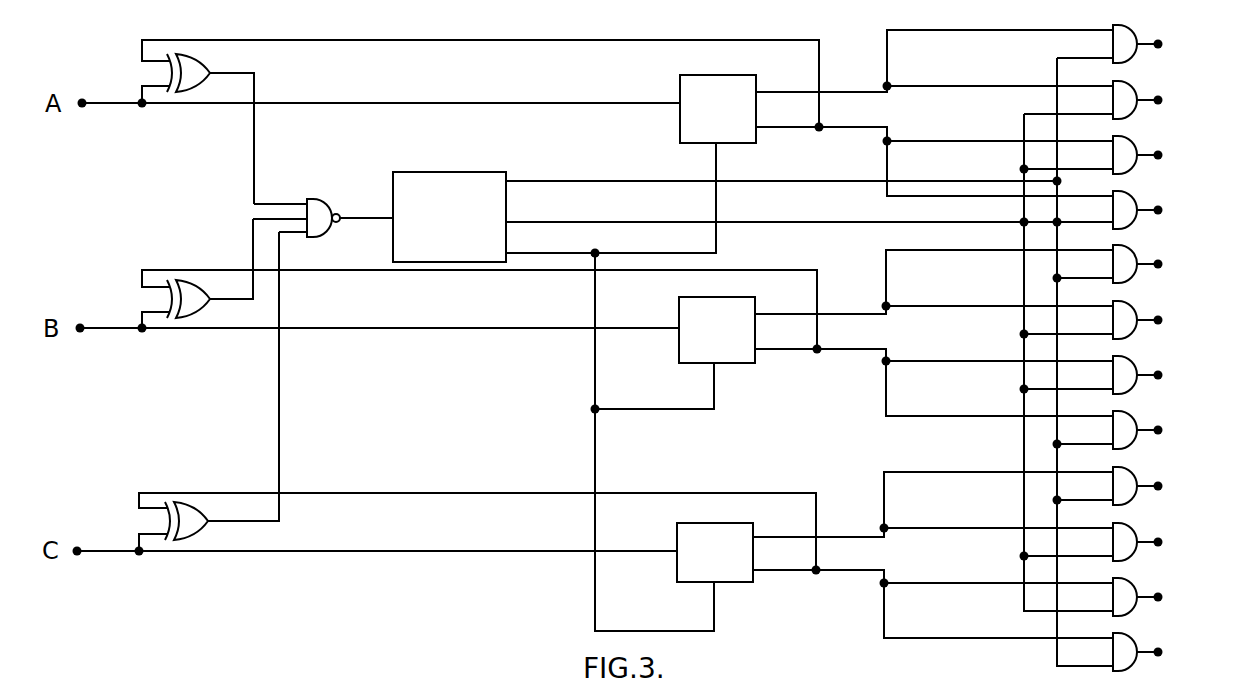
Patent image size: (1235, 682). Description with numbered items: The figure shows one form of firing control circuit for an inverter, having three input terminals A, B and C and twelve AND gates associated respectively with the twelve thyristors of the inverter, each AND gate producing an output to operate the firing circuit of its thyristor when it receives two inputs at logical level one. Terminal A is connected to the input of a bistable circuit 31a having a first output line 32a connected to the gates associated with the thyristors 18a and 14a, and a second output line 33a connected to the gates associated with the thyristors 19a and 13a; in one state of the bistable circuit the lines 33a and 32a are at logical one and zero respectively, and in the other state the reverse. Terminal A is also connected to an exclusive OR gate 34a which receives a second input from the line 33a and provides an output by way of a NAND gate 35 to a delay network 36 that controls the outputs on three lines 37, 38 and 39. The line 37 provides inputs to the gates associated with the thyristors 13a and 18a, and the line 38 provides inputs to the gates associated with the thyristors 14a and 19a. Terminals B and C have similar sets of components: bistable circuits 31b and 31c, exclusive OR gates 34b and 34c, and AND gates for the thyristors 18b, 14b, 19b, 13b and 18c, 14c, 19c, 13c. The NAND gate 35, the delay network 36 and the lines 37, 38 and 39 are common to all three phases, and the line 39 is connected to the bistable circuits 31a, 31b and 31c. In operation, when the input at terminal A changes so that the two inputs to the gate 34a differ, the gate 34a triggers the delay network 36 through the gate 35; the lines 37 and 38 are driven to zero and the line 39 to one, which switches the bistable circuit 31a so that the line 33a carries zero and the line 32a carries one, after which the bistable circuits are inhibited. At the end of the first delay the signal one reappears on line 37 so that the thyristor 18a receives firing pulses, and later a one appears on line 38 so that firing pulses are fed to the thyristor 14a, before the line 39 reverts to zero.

The thyristor 13a is at (1166, 210).
The thyristor 13b is at (1167, 430).
The thyristor 13c is at (1166, 652).
The thyristor 14a is at (1166, 100).
The thyristor 14b is at (1167, 320).
The thyristor 14c is at (1166, 542).
The thyristor 18a is at (1166, 44).
The thyristor 18b is at (1167, 264).
The thyristor 18c is at (1166, 486).
The thyristor 19a is at (1166, 155).
The thyristor 19b is at (1167, 375).
The thyristor 19c is at (1166, 597).
The bistable circuit 31a is at (697, 75).
The bistable circuit 31b is at (679, 353).
The bistable circuit 31c is at (695, 523).
The first output line 32a is at (825, 92).
The second output line 33a is at (830, 129).
The exclusive OR gate 34a is at (201, 55).
The exclusive OR gate 34b is at (198, 311).
The exclusive OR gate 34c is at (197, 534).
The NAND gate 35 is at (313, 199).
The delay network 36 is at (460, 172).
The line 37 is at (560, 181).
The line 38 is at (560, 222).
The line 39 is at (560, 253).